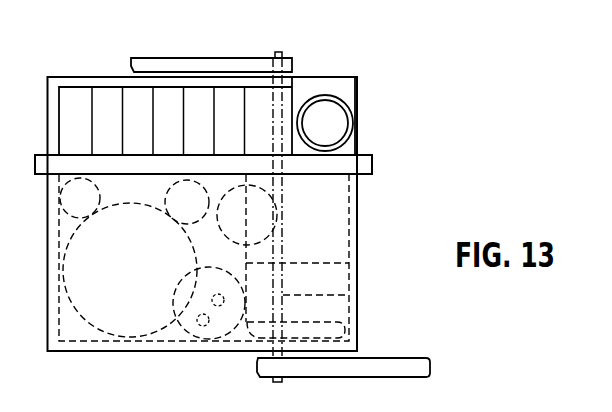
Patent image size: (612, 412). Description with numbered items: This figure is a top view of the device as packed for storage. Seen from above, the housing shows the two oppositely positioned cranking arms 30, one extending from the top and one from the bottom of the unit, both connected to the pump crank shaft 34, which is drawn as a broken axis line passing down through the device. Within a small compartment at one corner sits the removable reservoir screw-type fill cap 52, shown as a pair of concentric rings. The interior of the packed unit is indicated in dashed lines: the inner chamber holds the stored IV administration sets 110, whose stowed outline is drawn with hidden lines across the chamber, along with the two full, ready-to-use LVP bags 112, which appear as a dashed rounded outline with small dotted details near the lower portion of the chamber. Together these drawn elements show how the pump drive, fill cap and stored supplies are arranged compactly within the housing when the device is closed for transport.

The cranking arm 30 is at (157, 66).
The pump crank shaft 34 is at (283, 53).
The reservoir screw-type fill cap 52 is at (333, 125).
The IV administration set 110 is at (223, 100).
The full, ready-to-use LVP bag 112 is at (205, 304).